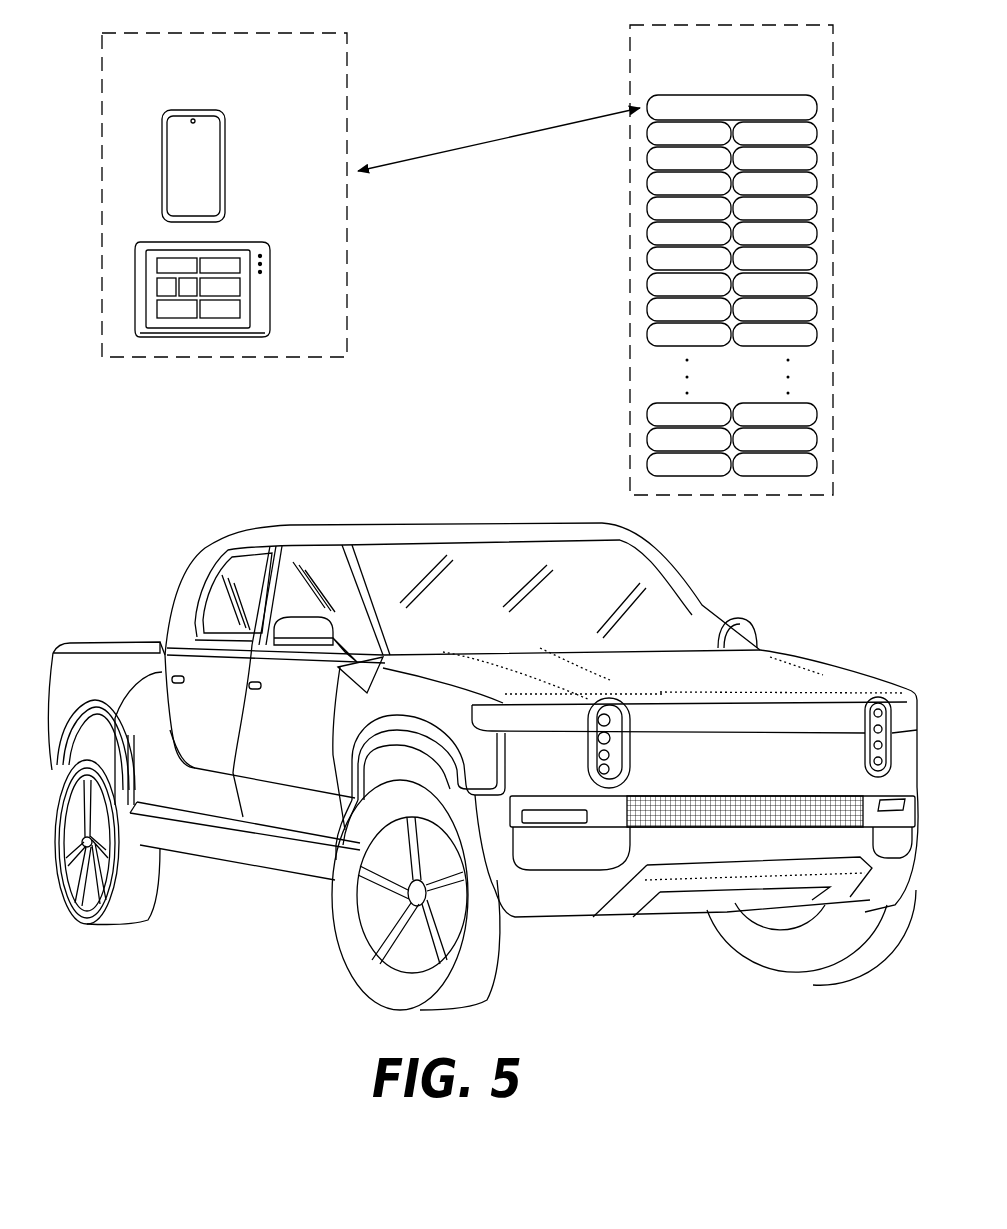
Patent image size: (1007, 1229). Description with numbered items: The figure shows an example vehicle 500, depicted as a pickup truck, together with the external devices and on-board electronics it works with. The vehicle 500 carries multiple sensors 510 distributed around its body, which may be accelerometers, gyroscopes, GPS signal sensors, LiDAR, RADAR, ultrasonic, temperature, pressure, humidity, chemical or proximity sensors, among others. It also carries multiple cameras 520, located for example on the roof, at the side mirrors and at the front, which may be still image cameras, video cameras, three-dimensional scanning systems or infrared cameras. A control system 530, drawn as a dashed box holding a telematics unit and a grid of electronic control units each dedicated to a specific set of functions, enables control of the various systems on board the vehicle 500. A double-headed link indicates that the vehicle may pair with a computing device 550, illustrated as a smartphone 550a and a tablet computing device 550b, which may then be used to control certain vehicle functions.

The vehicle 500 is at (180, 556).
The sensor 510 is at (53, 757).
The camera 520 is at (769, 777).
The control system 530 is at (684, 668).
The computing device 550 is at (224, 195).
The smartphone 550a is at (228, 166).
The tablet computing device 550b is at (272, 304).